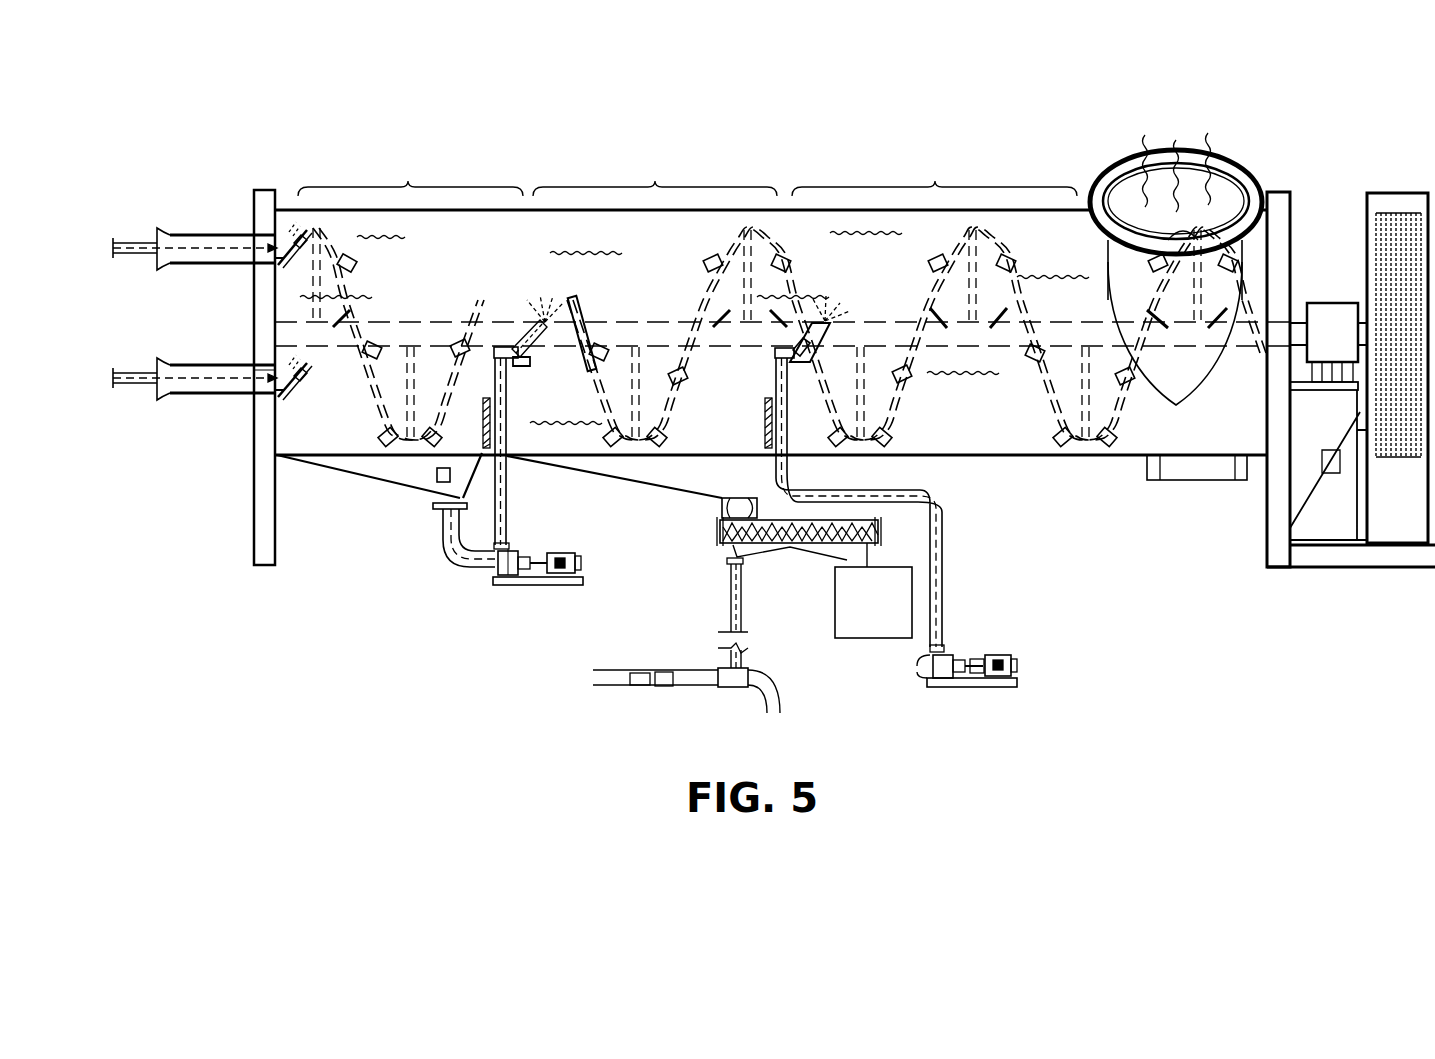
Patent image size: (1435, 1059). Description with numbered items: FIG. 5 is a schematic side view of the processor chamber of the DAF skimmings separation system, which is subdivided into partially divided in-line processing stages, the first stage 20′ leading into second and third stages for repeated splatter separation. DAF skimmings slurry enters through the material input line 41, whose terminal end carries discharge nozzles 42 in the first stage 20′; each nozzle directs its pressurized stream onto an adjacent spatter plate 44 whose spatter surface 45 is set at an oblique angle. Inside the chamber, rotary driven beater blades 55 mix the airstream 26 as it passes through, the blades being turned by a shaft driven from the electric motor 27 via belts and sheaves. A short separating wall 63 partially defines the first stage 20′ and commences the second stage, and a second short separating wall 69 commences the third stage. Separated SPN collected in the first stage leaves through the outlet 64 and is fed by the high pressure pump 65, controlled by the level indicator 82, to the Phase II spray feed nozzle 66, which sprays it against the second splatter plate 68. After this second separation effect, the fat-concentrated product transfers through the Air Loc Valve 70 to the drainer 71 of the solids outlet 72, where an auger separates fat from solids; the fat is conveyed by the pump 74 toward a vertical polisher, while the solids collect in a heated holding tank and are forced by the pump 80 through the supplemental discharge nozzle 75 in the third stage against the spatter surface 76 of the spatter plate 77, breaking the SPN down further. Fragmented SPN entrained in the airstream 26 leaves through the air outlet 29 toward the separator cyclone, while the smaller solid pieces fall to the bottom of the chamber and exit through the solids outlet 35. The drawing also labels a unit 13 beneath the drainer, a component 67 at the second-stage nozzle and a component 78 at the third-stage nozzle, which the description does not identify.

The control unit 13 is at (835, 597).
The first stage 20′ is at (415, 163).
The airstream 26 is at (577, 255).
The electric motor 27 is at (1385, 193).
The air outlet 29 is at (1184, 159).
The solids outlet 35 is at (1177, 481).
The material input line 41 is at (233, 236).
The discharge nozzles 42 is at (273, 370).
The spatter plate 44 is at (292, 262).
The spatter surface 45 is at (301, 232).
The beater blades 55 is at (376, 346).
The short separating wall 63 is at (437, 477).
The outlet 64 is at (432, 508).
The high pressure pump 65 is at (548, 551).
The spray feed nozzle 66 is at (513, 345).
The spray nozzle 67 is at (524, 325).
The second splatter plate 68 is at (525, 366).
The second short separating wall 69 is at (766, 424).
The Air Loc Valve 70 is at (721, 508).
The drainer 71 is at (708, 537).
The solids outlet 72 is at (718, 566).
The pump 74 is at (641, 681).
The supplemental discharge nozzle 75 is at (775, 350).
The spatter surface 76 is at (800, 323).
The spatter plate 77 is at (812, 364).
The spray nozzle 78 is at (860, 325).
The pump 80 is at (968, 688).
The level indicator 82 is at (483, 436).